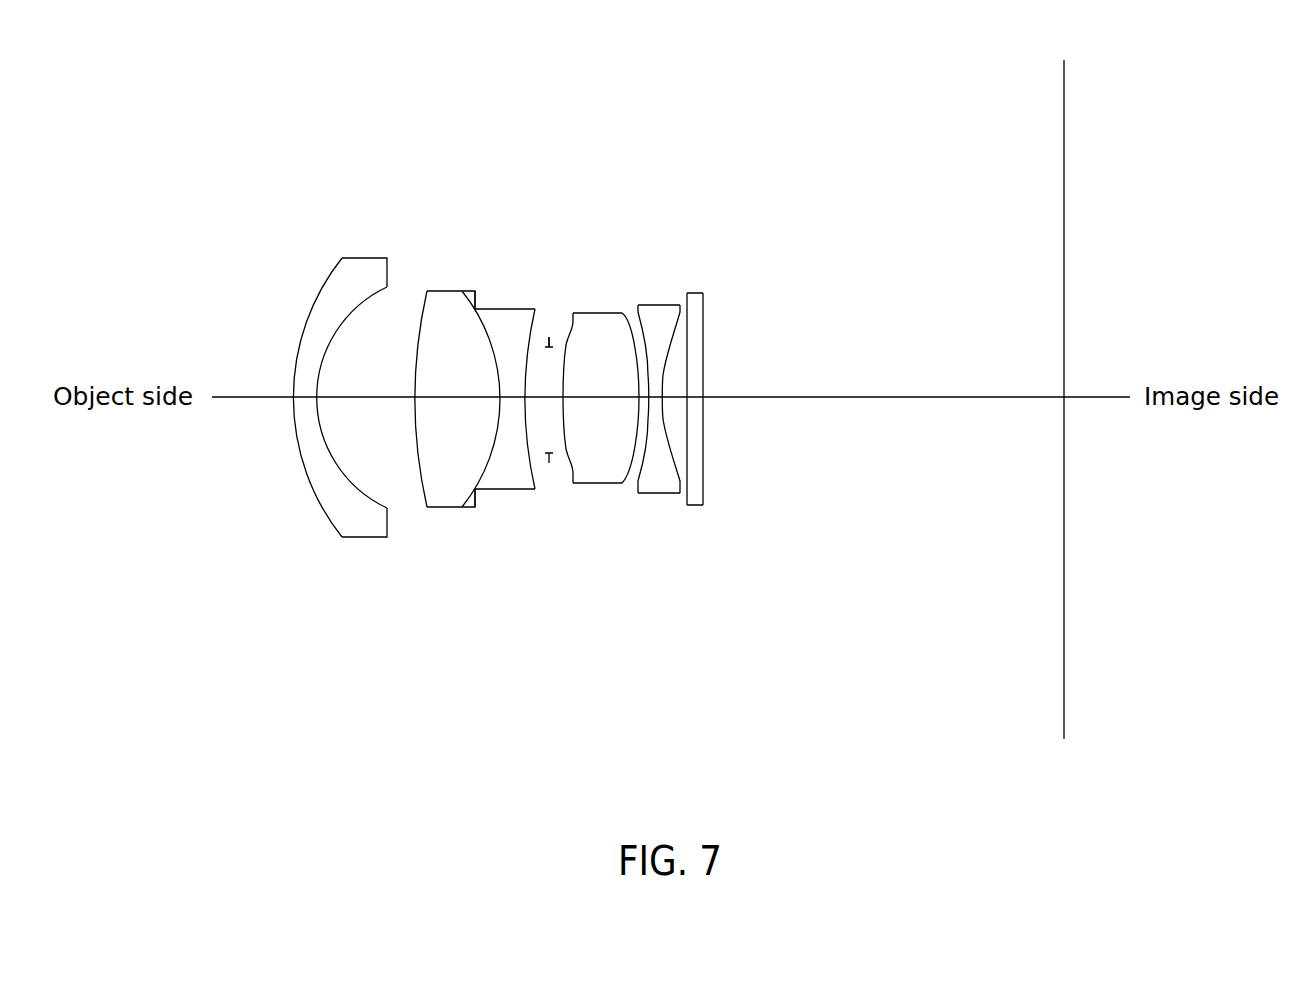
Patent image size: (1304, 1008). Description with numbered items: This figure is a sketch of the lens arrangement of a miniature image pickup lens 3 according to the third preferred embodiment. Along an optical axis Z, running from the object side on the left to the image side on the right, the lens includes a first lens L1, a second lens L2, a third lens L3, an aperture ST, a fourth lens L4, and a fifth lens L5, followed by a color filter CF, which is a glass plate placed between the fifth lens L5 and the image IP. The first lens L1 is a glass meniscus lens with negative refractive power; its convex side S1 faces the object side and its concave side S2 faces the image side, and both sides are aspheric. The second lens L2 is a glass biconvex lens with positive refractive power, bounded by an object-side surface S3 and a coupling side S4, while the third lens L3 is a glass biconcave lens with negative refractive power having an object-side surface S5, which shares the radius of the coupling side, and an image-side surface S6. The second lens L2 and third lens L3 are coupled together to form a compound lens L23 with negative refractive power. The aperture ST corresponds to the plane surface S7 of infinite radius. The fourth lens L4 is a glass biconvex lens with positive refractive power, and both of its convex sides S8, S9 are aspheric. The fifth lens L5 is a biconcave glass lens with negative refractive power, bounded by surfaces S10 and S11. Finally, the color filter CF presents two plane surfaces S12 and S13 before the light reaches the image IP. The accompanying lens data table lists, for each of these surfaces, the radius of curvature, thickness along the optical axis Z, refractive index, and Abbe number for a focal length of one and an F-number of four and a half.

The miniature image pickup lens 3 is at (120, 135).
The optical axis Z is at (246, 398).
The image IP is at (1066, 680).
The first lens L1 is at (338, 405).
The second lens L2 is at (442, 381).
The third lens L3 is at (505, 390).
The compound lens L23 is at (505, 660).
The fourth lens L4 is at (601, 419).
The fifth lens L5 is at (666, 370).
The aperture ST is at (555, 391).
The color filter CF is at (751, 389).
The convex side of the first lens S1 is at (320, 294).
The concave side of the first lens S2 is at (372, 294).
The object side of the second lens S3 is at (418, 298).
The coupling side S4 is at (474, 292).
The object side of the third lens S5 is at (498, 308).
The image side of the third lens S6 is at (532, 308).
The aperture side S7 is at (549, 337).
The object-side convex side of the fourth lens S8 is at (587, 313).
The image-side convex side of the fourth lens S9 is at (618, 313).
The object side of the fifth lens S10 is at (641, 316).
The image side of the fifth lens S11 is at (675, 318).
The object side of the color filter S12 is at (690, 303).
The image side of the color filter S13 is at (703, 312).